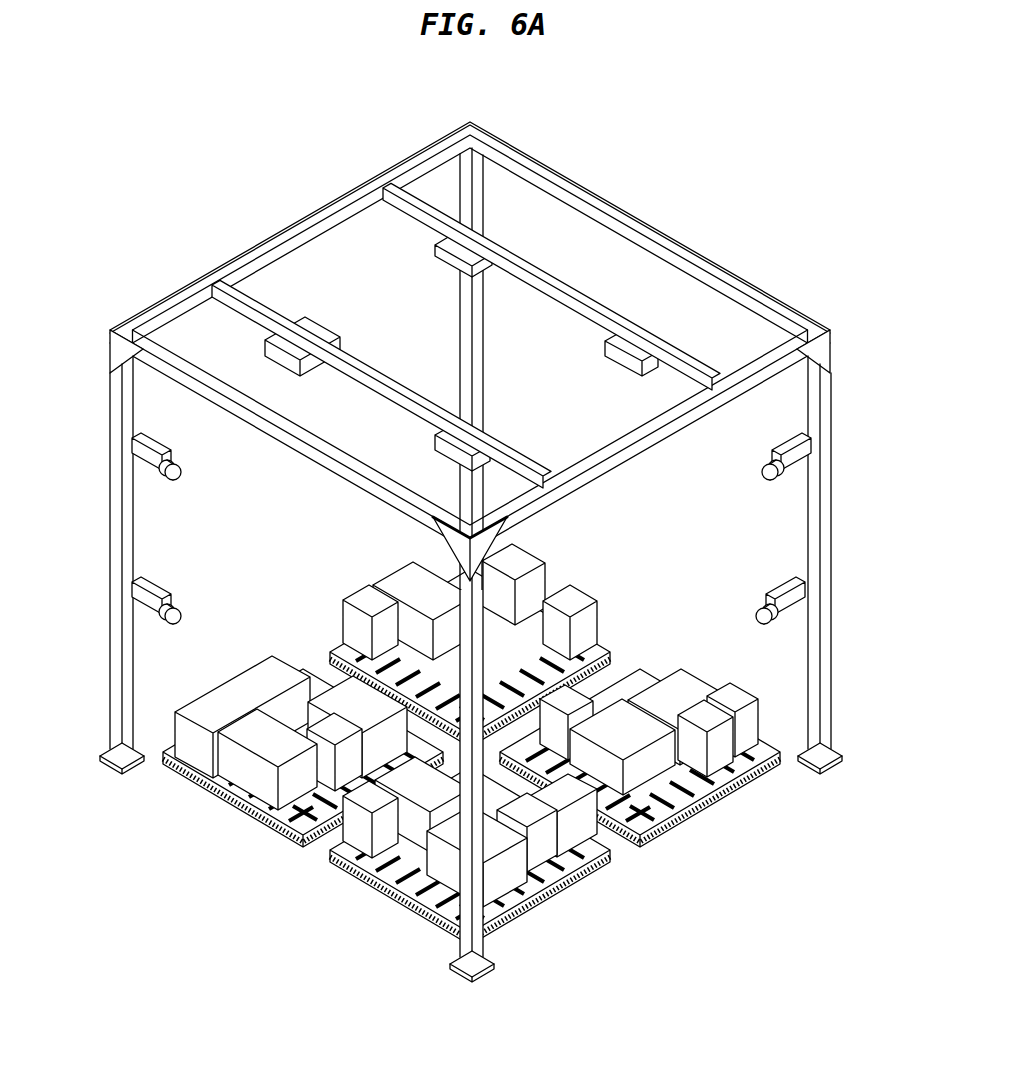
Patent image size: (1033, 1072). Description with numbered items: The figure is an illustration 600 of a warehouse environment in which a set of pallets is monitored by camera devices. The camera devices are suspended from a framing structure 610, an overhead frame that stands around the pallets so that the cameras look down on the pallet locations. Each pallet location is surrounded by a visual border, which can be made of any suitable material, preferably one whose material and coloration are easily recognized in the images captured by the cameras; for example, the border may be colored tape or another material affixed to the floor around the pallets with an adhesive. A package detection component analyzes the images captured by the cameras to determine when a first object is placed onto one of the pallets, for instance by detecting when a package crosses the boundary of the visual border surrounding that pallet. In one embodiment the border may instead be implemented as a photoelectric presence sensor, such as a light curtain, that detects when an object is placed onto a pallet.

The illustration 600 is at (652, 108).
The framing structure 610 is at (760, 289).